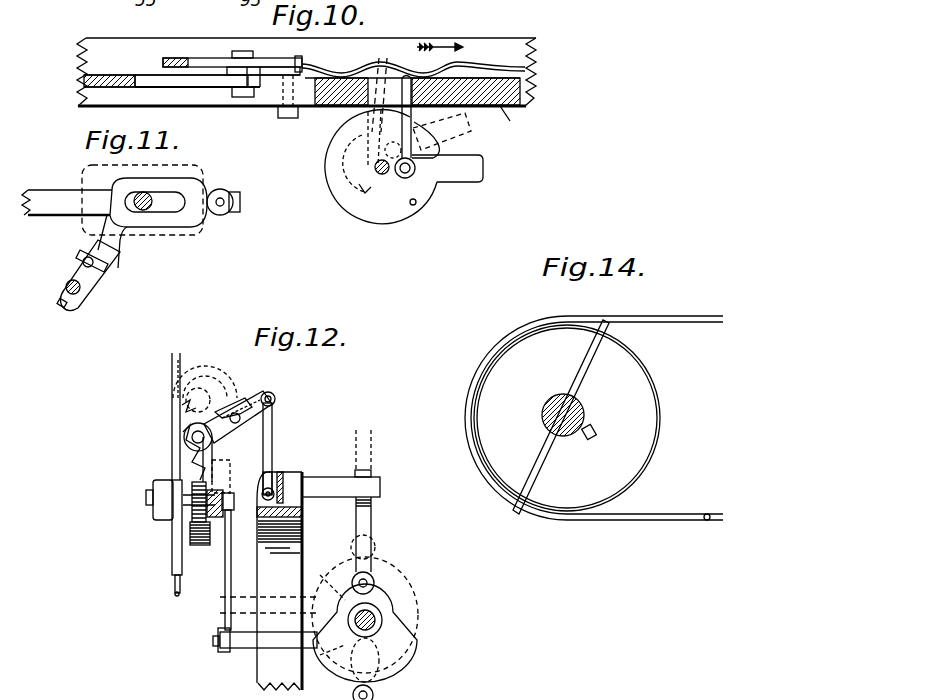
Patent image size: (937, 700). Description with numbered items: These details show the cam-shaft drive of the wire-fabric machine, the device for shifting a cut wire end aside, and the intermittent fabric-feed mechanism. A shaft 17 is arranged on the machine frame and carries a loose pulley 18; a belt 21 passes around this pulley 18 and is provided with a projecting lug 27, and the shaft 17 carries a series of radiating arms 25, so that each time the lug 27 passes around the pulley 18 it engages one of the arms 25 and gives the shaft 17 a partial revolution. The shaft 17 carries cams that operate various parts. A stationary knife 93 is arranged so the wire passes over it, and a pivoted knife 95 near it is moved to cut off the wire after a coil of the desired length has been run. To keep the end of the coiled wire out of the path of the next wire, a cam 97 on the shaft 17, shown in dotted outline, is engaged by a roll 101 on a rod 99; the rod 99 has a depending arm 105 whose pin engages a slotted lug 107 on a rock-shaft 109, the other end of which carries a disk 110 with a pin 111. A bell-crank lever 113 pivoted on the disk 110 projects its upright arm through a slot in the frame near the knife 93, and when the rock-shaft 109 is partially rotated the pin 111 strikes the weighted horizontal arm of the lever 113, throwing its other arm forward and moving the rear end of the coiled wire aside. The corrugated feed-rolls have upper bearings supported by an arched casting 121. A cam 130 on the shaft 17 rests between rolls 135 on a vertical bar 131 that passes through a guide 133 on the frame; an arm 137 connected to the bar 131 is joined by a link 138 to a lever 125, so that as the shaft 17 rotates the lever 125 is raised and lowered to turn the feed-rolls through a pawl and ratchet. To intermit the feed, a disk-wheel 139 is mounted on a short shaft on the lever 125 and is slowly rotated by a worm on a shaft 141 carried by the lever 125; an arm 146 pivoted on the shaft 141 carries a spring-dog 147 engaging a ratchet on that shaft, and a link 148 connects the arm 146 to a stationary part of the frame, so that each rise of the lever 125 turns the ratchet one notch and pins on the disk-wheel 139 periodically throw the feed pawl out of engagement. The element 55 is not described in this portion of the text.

In FIG. 11, the shaft 17 is at (146, 207).
In FIG. 12, the shaft 17 is at (376, 620).
In FIG. 14, the shaft 17 is at (585, 414).
In FIG. 14, the loose pulley 18 is at (660, 430).
In FIG. 14, the belt 21 is at (641, 521).
In FIG. 14, the radiating arms 25 is at (541, 467).
In FIG. 14, the projecting lug 27 is at (706, 521).
In FIG. 10, the board 55 is at (512, 122).
In FIG. 10, the stationary knife 93 is at (305, 68).
In FIG. 10, the pivoted knife 95 is at (192, 58).
In FIG. 11, the cam 97 is at (152, 238).
In FIG. 11, the rod 99 is at (67, 202).
In FIG. 11, the roll 101 is at (219, 192).
In FIG. 11, the depending arm 105 is at (82, 238).
In FIG. 11, the slotted lug 107 is at (94, 278).
In FIG. 10, the rock-shaft 109 is at (381, 175).
In FIG. 11, the rock-shaft 109 is at (80, 293).
In FIG. 10, the disk 110 is at (367, 215).
In FIG. 10, the pin 111 is at (418, 205).
In FIG. 10, the bell-crank lever 113 is at (442, 131).
In FIG. 12, the arched casting 121 is at (294, 566).
In FIG. 12, the lever 125 is at (218, 497).
In FIG. 12, the cam 130 is at (412, 636).
In FIG. 12, the vertical bar 131 is at (372, 542).
In FIG. 12, the guide 133 is at (381, 492).
In FIG. 12, the rolls 135 is at (373, 696).
In FIG. 12, the arm 137 is at (250, 646).
In FIG. 12, the link 138 is at (226, 575).
In FIG. 12, the disk-wheel 139 is at (174, 537).
In FIG. 12, the shaft 141 is at (190, 434).
In FIG. 12, the arm 146 is at (269, 399).
In FIG. 12, the spring-dog 147 is at (224, 398).
In FIG. 12, the link 148 is at (274, 440).